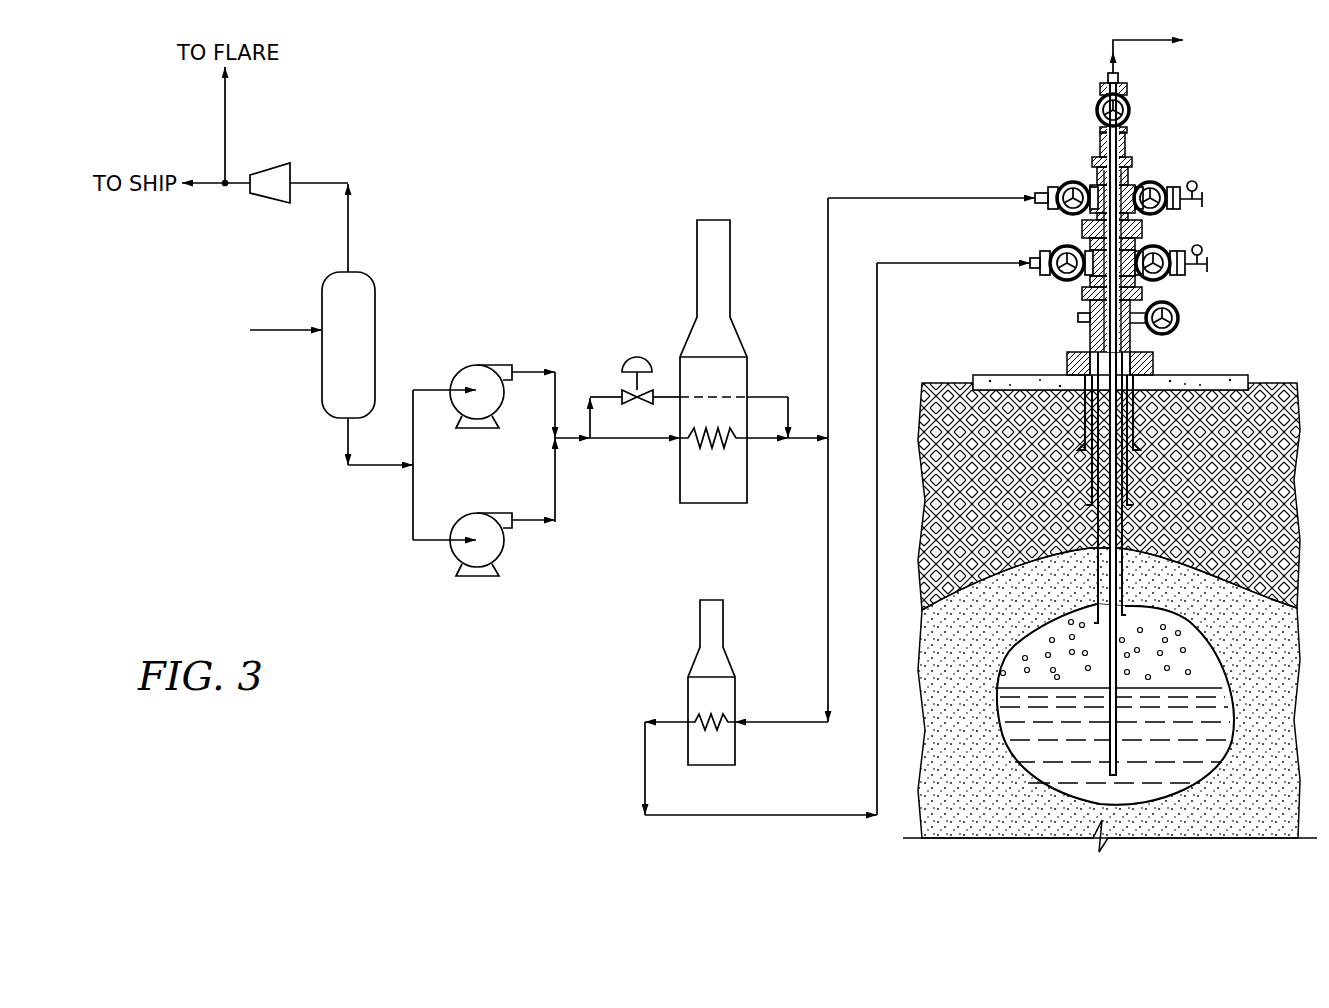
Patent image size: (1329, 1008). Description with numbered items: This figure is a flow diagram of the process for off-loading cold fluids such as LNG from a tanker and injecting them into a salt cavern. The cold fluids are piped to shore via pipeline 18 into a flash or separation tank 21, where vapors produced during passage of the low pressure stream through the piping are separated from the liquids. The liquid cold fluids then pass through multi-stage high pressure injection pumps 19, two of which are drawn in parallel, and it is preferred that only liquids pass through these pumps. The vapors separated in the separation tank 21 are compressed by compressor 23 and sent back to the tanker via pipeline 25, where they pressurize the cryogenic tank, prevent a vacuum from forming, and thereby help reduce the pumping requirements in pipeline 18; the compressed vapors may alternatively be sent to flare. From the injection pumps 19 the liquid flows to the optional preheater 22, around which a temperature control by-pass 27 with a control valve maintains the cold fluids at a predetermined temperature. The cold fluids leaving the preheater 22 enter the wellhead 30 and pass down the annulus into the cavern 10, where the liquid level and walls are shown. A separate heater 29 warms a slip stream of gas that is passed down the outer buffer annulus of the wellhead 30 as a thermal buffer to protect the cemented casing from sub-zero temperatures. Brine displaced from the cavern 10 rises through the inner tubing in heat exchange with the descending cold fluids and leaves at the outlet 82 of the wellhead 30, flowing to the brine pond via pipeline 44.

The cavern 10 is at (1027, 653).
The pipeline 18 is at (281, 332).
The multi-stage high pressure injection pumps 19 is at (503, 546).
The flash or separation tank 21 is at (375, 303).
The preheater 22 is at (680, 477).
The compressor 23 is at (271, 168).
The pipeline 25 is at (208, 185).
The temperature control by-pass 27 is at (773, 397).
The heater 29 is at (688, 690).
The wellhead 30 is at (1092, 158).
The pipeline 44 is at (1102, 76).
The outlet 82 is at (1116, 63).